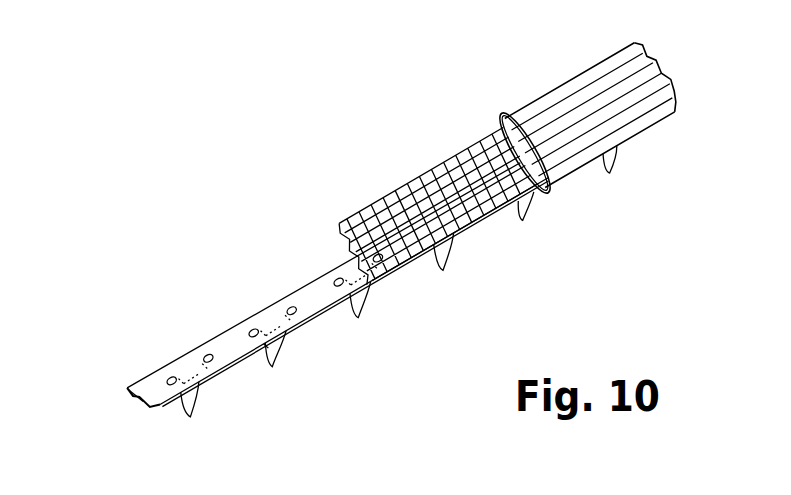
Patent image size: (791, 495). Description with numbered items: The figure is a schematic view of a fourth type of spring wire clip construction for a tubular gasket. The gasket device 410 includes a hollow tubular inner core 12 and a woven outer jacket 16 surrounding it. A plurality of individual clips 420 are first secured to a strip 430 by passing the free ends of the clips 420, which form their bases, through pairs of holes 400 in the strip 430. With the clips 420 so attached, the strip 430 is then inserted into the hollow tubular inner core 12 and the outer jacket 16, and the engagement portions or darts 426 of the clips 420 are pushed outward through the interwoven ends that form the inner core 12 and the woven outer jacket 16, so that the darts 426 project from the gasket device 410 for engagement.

The inner core 12 is at (418, 172).
The woven outer jacket 16 is at (647, 132).
The holes 400 is at (206, 355).
The gasket device 410 is at (247, 138).
The clips 420 is at (262, 368).
The darts 426 is at (281, 356).
The strip 430 is at (147, 387).